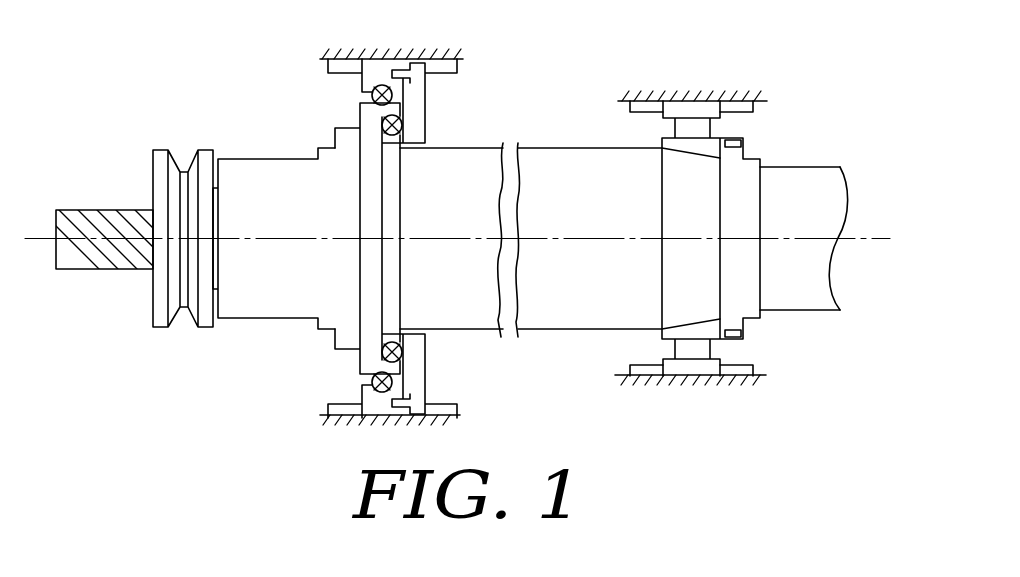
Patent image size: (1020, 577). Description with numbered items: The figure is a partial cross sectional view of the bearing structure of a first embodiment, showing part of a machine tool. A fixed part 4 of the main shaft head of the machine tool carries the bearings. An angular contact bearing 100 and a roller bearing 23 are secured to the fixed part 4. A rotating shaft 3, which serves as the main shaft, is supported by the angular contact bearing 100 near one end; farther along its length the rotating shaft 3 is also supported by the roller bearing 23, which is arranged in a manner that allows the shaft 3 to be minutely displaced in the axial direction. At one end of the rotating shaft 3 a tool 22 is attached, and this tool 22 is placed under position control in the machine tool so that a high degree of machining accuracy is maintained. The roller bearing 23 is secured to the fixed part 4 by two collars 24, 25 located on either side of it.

The rotating shaft 3 is at (256, 172).
The fixed part 4 is at (415, 56).
The tool 22 is at (158, 173).
The roller bearing 23 is at (692, 110).
The collar 24 is at (645, 100).
The collar 25 is at (745, 100).
The angular contact bearing 100 is at (326, 379).